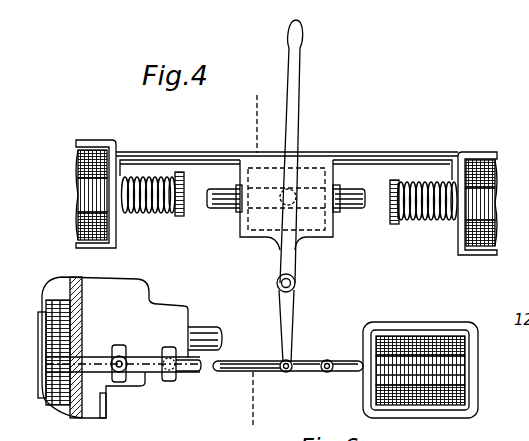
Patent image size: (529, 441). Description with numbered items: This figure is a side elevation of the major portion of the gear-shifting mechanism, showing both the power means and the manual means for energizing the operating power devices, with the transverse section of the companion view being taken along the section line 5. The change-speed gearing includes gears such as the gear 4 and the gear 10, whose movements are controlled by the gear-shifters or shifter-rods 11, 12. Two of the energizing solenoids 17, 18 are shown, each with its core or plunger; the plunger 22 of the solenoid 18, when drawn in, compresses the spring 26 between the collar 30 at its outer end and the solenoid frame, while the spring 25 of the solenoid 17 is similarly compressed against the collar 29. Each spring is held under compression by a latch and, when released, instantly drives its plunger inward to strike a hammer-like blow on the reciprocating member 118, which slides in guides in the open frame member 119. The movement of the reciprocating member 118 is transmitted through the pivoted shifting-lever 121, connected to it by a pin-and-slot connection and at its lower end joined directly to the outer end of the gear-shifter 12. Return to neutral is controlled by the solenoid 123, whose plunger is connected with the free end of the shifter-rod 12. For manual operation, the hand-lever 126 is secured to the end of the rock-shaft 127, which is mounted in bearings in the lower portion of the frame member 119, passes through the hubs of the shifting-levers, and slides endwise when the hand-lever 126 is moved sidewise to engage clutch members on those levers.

The gear 4 is at (50, 310).
The section line 5— 5 is at (258, 258).
The gear 10 is at (60, 398).
The gear-shifter or shifter-rod 11 is at (185, 372).
The gear-shifter or shifter-rod 12 is at (143, 386).
The solenoid 17 is at (88, 160).
The solenoid 18 is at (480, 165).
The plunger 22 is at (433, 216).
The spring 25 is at (158, 211).
The spring 26 is at (416, 184).
The collar 29 is at (185, 190).
The collar 30 is at (391, 191).
The reciprocating member or rod 118 is at (350, 213).
The open frame member 119 is at (270, 205).
The shifting-lever 121 is at (290, 325).
The solenoid 123 is at (426, 340).
The hand-lever 126 is at (300, 129).
The rock-shaft 127 is at (296, 283).